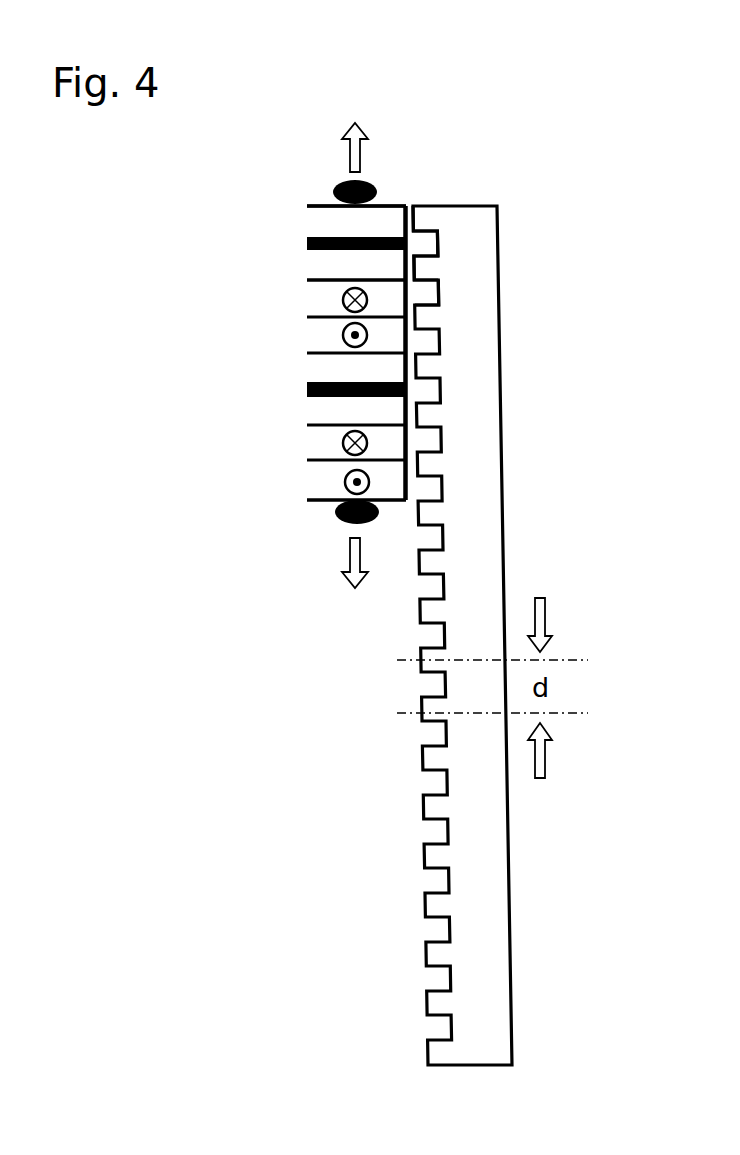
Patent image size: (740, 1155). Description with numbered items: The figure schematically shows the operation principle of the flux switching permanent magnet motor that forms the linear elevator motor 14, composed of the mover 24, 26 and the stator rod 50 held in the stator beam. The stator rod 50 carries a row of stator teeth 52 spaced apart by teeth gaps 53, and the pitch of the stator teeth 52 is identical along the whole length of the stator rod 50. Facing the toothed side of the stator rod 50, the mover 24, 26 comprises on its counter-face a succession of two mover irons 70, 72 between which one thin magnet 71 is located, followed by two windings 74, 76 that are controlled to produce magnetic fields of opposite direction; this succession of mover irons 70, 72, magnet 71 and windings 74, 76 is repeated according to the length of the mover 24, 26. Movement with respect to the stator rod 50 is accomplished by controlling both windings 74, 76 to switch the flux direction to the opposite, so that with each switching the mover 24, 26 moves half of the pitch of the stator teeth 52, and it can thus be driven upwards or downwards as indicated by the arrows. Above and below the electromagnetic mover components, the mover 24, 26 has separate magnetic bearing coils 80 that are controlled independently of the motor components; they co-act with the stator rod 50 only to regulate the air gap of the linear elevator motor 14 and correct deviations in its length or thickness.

The linear elevator motor 14 is at (262, 540).
The mover 24 is at (315, 193).
The mover 26 is at (315, 193).
The stator rod 50 is at (475, 402).
The stator teeth 52 is at (423, 268).
The teeth gaps 53 is at (423, 292).
The mover iron 70 is at (317, 222).
The magnet 71 is at (307, 237).
The mover iron 72 is at (318, 254).
The winding 74 is at (340, 292).
The winding 76 is at (335, 340).
The magnetic bearing coils 80 is at (366, 183).